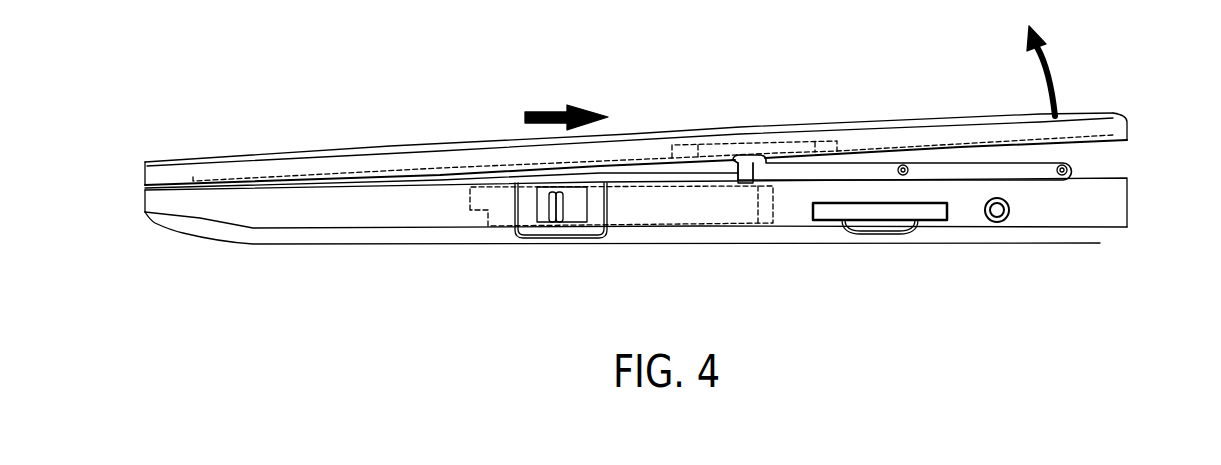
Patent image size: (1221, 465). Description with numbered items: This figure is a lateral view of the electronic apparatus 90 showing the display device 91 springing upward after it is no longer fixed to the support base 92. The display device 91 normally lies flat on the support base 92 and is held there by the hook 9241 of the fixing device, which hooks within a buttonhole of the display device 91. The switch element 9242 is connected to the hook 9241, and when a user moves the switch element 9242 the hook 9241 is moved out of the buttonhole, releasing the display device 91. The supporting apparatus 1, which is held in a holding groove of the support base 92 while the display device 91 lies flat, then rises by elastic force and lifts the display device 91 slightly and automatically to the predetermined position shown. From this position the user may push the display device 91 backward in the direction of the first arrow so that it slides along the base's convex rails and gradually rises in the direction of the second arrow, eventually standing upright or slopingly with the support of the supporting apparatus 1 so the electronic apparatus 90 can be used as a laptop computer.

The electronic apparatus 90 is at (1128, 56).
The display device 91 is at (413, 146).
The support base 92 is at (312, 233).
The hook 9241 is at (745, 173).
The switch element 9242 is at (555, 207).
The supporting apparatus 1 is at (1092, 162).